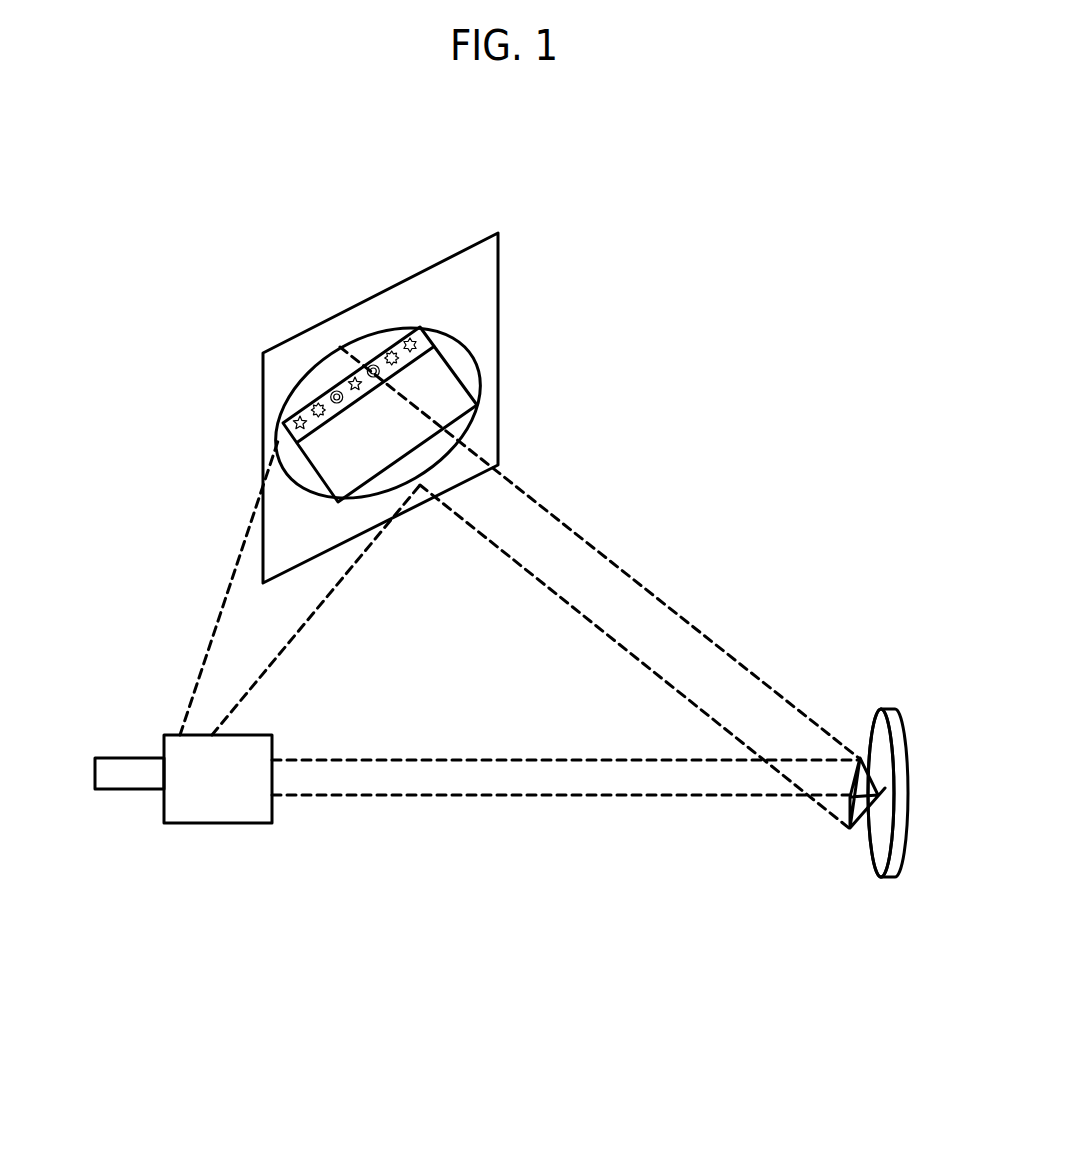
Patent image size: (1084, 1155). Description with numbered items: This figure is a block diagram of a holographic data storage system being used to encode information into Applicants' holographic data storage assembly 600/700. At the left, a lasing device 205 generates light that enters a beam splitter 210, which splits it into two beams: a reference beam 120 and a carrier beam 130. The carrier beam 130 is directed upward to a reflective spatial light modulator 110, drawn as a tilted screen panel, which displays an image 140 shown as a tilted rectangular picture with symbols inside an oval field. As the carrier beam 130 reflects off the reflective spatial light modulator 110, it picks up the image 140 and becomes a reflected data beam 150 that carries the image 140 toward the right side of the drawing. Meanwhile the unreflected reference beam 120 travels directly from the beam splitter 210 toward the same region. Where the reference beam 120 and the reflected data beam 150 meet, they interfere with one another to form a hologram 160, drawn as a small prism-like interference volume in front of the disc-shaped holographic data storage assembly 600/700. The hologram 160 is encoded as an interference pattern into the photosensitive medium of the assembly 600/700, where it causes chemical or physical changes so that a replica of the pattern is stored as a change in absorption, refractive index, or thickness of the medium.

The reflective spatial light modulator 110 is at (493, 285).
The image 140 is at (462, 388).
The carrier beam 130 is at (271, 649).
The reflected data beam 150 is at (566, 545).
The reference beam 120 is at (435, 790).
The beam splitter 210 is at (218, 815).
The lasing device 205 is at (110, 778).
The hologram 160 is at (862, 827).
The holographic data storage assembly 600 is at (878, 897).
The holographic data storage assembly 700 is at (881, 793).